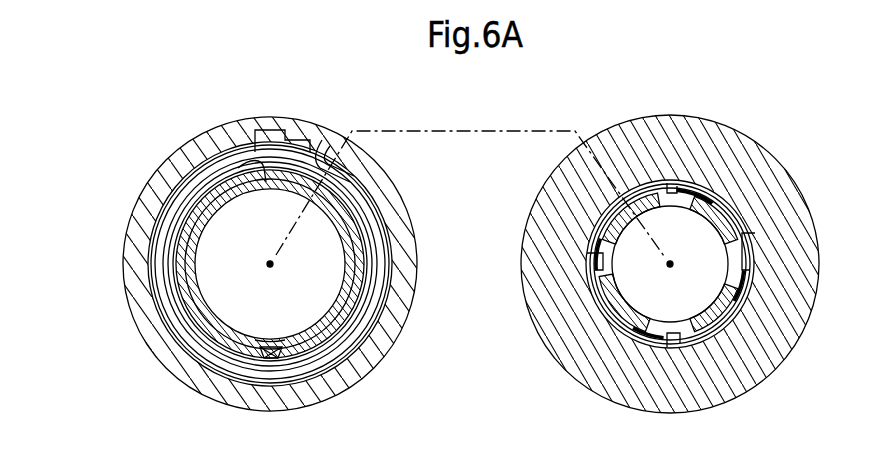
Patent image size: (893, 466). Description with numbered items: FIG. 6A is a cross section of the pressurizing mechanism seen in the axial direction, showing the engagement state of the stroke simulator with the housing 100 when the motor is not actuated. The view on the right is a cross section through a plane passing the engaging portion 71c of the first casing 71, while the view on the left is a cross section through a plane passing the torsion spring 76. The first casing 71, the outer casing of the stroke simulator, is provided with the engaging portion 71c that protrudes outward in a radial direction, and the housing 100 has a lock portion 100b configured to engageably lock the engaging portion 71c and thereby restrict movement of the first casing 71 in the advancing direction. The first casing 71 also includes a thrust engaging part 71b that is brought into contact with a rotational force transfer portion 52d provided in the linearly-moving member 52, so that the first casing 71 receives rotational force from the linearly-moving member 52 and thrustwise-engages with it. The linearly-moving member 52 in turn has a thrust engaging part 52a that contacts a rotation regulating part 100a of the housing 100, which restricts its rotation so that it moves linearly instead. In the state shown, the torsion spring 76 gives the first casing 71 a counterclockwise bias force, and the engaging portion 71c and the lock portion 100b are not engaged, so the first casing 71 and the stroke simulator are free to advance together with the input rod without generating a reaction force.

The housing 100 is at (373, 360).
The rotation regulating part 100a is at (318, 145).
The lock portion 100b is at (700, 180).
The torsion spring 76 is at (177, 205).
The linearly-moving member 52 is at (197, 322).
The thrust engaging part 52a is at (268, 128).
The rotational force transfer portion 52d is at (268, 345).
The first casing 71 is at (247, 190).
The thrust engaging part 71b is at (262, 352).
The engaging portion 71c is at (648, 190).